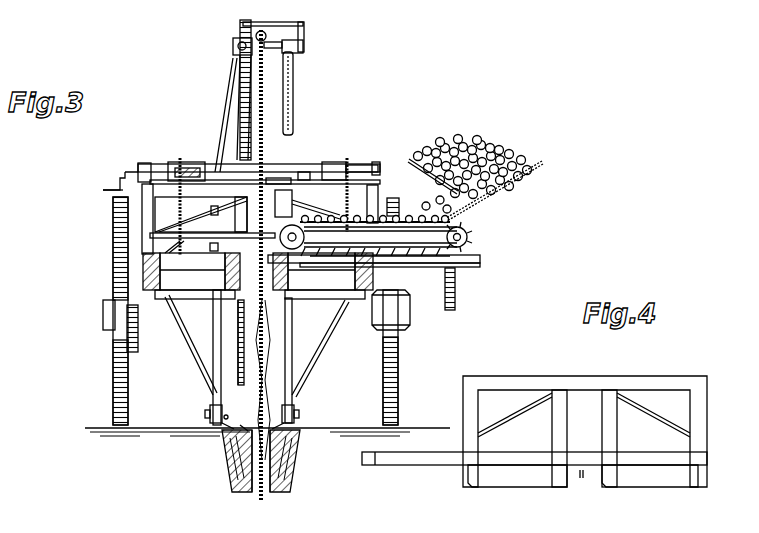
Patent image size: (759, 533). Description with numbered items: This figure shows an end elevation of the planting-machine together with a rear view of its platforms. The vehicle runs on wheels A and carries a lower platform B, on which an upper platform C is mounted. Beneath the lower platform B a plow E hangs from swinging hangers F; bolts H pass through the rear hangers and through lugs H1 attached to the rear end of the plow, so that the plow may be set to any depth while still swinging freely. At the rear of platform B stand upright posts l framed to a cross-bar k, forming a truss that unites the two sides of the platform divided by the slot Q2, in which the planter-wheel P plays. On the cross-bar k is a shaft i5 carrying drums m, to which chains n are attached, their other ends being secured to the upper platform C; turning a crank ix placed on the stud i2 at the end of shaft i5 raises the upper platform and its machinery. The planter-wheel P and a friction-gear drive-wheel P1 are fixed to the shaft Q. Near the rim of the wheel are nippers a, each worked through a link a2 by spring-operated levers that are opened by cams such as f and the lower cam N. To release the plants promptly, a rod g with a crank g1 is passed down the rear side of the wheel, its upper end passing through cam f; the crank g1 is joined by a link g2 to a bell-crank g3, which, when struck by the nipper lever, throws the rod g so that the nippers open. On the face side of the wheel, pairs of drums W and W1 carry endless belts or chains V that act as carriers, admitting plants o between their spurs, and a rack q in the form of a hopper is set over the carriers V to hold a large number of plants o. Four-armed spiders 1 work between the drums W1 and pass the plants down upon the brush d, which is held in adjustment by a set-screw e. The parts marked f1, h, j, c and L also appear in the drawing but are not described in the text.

In FIG. 3, the crank g1 is at (240, 28).
In FIG. 3, the link g2 is at (278, 24).
In FIG. 3, the bell-crank g3 is at (300, 47).
In FIG. 3, the cam f is at (233, 46).
In FIG. 3, the slotted bar f1 is at (238, 90).
In FIG. 3, the rod g is at (228, 120).
In FIG. 3, the nippers a is at (266, 45).
In FIG. 3, the pendulum rod h is at (294, 70).
In FIG. 3, the planter-wheel P is at (290, 98).
In FIG. 3, the stud i2 is at (126, 173).
In FIG. 3, the crank ix is at (104, 190).
In FIG. 3, the shaft i5 is at (160, 167).
In FIG. 3, the chains n is at (180, 165).
In FIG. 3, the drums m is at (190, 170).
In FIG. 3, the drums W1 is at (290, 180).
In FIG. 3, the bracket j is at (308, 172).
In FIG. 3, the cross-bar k is at (372, 170).
In FIG. 4, the cross-bar k is at (557, 385).
In FIG. 3, the upright posts l is at (268, 209).
In FIG. 4, the upright posts l is at (581, 438).
In FIG. 3, the frame brace c is at (241, 200).
In FIG. 3, the shaft Q is at (160, 236).
In FIG. 3, the lower platform B is at (190, 283).
In FIG. 4, the lower platform B is at (512, 480).
In FIG. 3, the endless belts or chains V is at (460, 226).
In FIG. 3, the swinging hangers F is at (190, 347).
In FIG. 3, the wheels A is at (113, 386).
In FIG. 3, the bolts H is at (205, 412).
In FIG. 3, the lower cam N is at (222, 423).
In FIG. 3, the lugs H1 is at (220, 430).
In FIG. 3, the lining L is at (222, 455).
In FIG. 3, the plow E is at (261, 474).
In FIG. 3, the plants o is at (500, 148).
In FIG. 3, the brush d is at (272, 300).
In FIG. 3, the spiders 1 is at (292, 300).
In FIG. 3, the set-screw e is at (372, 305).
In FIG. 3, the link a2 is at (234, 341).
In FIG. 3, the drums W is at (468, 238).
In FIG. 3, the rack q is at (518, 178).
In FIG. 3, the upper platform C is at (458, 266).
In FIG. 4, the upper platform C is at (432, 460).
In FIG. 3, the friction-gear drive-wheel P1 is at (452, 300).
In FIG. 4, the slot Q2 is at (578, 490).